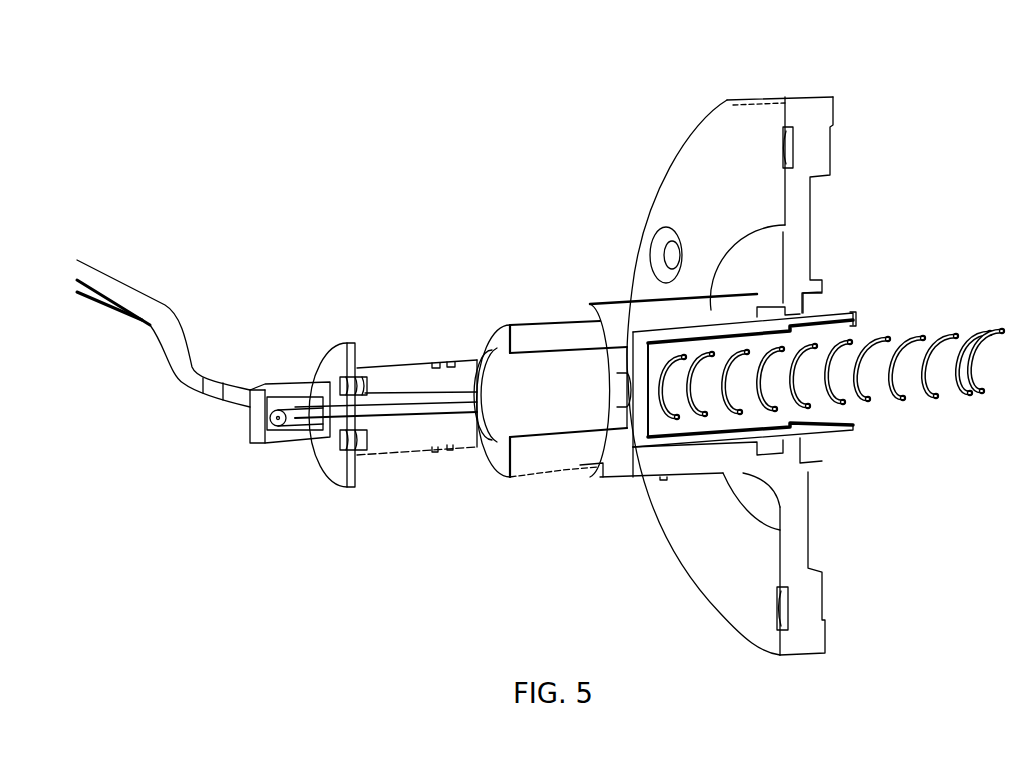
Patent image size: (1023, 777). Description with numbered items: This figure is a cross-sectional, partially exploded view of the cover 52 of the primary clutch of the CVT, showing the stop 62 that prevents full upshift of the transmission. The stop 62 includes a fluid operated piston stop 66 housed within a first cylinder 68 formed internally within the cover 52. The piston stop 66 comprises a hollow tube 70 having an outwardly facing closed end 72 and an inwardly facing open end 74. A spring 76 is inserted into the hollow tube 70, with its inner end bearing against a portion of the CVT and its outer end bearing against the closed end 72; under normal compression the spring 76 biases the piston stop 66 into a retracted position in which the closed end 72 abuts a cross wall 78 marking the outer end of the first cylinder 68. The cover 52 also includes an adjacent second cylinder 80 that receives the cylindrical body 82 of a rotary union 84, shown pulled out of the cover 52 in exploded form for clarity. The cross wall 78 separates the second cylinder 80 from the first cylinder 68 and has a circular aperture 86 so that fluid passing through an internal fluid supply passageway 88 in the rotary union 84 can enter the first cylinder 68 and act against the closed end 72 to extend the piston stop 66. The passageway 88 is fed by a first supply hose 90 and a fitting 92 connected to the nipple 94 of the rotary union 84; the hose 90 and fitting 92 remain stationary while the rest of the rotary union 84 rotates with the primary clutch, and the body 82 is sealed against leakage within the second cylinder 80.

The cover 52 is at (740, 145).
The stop 62 is at (462, 277).
The piston stop 66 is at (836, 303).
The first cylinder 68 is at (640, 460).
The hollow tube 70 is at (737, 345).
The closed end 72 is at (721, 370).
The open end 74 is at (842, 316).
The spring 76 is at (866, 394).
The cross wall 78 is at (612, 357).
The second cylinder 80 is at (523, 415).
The cylindrical body 82 is at (403, 378).
The rotary union 84 is at (390, 335).
The circular aperture 86 is at (617, 389).
The internal fluid supply passageway 88 is at (408, 412).
The first supply hose 90 is at (173, 318).
The fitting 92 is at (280, 392).
The nipple 94 is at (320, 427).